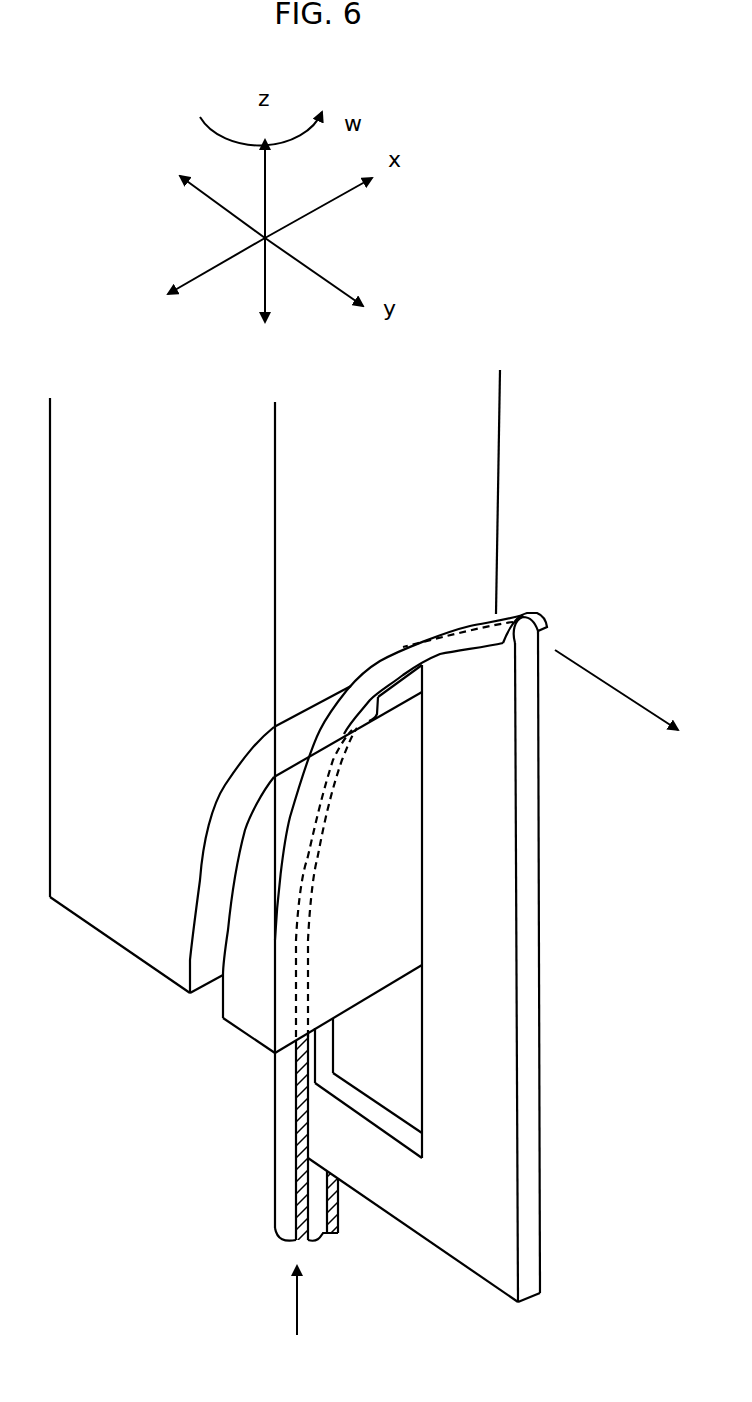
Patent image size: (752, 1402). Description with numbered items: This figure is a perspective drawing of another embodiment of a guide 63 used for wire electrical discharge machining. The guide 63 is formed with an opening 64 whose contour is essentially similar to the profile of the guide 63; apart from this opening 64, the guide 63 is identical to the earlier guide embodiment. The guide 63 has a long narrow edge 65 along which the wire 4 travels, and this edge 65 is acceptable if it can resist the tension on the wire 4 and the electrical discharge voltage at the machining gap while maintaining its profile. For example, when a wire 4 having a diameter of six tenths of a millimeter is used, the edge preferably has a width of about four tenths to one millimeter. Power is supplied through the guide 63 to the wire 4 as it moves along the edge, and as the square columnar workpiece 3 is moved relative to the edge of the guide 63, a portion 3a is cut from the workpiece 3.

The square columnar workpiece 3 is at (460, 432).
The portion cut from the workpiece 3a is at (245, 1017).
The wire 4 is at (545, 615).
The guide 63 is at (482, 810).
The opening 64 is at (395, 1063).
The long narrow edge 65 is at (322, 1060).